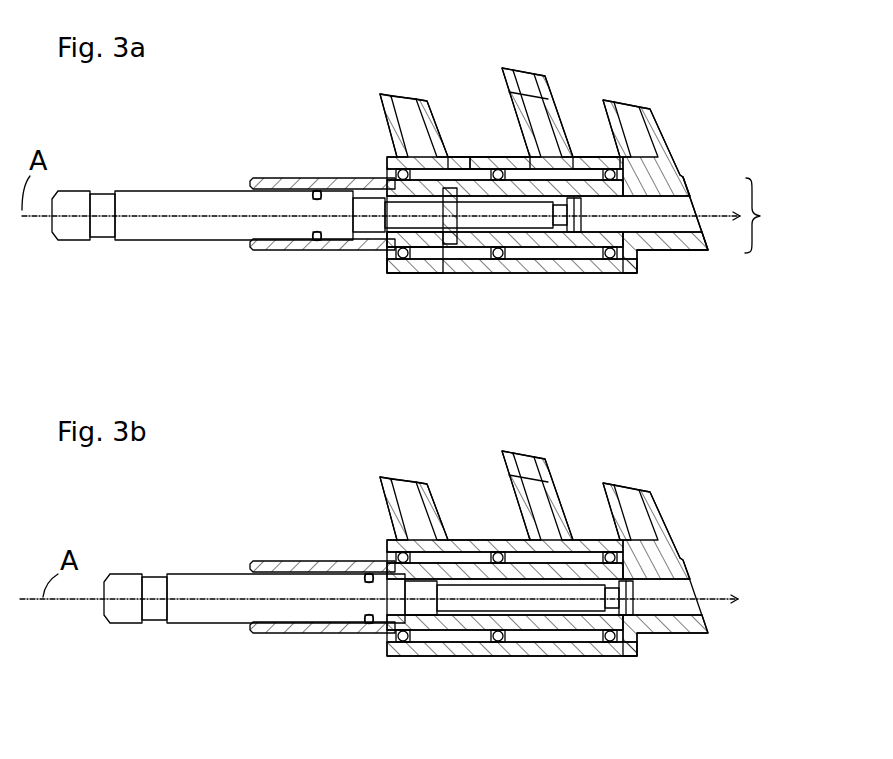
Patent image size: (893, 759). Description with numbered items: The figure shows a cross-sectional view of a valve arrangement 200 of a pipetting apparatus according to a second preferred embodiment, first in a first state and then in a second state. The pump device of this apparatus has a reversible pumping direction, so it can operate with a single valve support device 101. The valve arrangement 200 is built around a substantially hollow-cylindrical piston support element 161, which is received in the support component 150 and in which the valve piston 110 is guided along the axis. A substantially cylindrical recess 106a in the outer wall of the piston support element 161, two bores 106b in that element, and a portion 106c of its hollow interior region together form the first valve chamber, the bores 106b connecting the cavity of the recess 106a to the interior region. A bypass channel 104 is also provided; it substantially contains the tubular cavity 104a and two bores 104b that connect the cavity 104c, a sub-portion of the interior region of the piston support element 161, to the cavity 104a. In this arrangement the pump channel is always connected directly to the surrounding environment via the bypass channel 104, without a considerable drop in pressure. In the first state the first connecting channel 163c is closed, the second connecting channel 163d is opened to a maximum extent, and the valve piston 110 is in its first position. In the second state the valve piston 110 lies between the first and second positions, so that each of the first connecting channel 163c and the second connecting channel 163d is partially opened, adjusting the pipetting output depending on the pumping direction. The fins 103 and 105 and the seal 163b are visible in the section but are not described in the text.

In FIG. 3A, the valve arrangement 200 is at (708, 74).
In FIG. 3B, the valve arrangement 200 is at (680, 459).
In FIG. 3A, the valve support device 101 is at (783, 215).
In FIG. 3A, the third fin / locking fin 103 is at (633, 107).
In FIG. 3B, the third fin / locking fin 103 is at (623, 490).
In FIG. 3A, the bypass channel 104 is at (407, 105).
In FIG. 3B, the bypass channel 104 is at (398, 480).
In FIG. 3A, the tubular cavity 104a is at (370, 242).
In FIG. 3A, the bores 104b is at (420, 257).
In FIG. 3A, the cavity 104c is at (458, 153).
In FIG. 3A, the second fin 105 is at (537, 87).
In FIG. 3B, the second fin 105 is at (533, 467).
In FIG. 3A, the cylindrical recess 106a is at (587, 153).
In FIG. 3A, the bores 106b is at (500, 148).
In FIG. 3A, the portion of the interior region 106c is at (527, 253).
In FIG. 3A, the valve piston 110 is at (158, 243).
In FIG. 3B, the valve piston 110 is at (127, 627).
In FIG. 3A, the support component 150 is at (383, 112).
In FIG. 3A, the piston support element 161 is at (278, 177).
In FIG. 3A, the sealing ring 163b is at (445, 255).
In FIG. 3A, the first connecting channel 163c is at (607, 260).
In FIG. 3B, the first connecting channel 163c is at (557, 643).
In FIG. 3A, the second connecting channel 163d is at (470, 255).
In FIG. 3B, the second connecting channel 163d is at (468, 647).